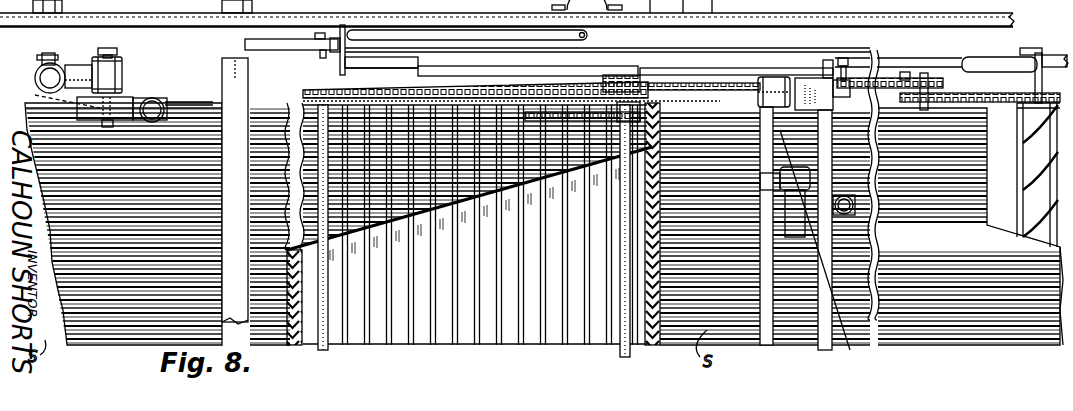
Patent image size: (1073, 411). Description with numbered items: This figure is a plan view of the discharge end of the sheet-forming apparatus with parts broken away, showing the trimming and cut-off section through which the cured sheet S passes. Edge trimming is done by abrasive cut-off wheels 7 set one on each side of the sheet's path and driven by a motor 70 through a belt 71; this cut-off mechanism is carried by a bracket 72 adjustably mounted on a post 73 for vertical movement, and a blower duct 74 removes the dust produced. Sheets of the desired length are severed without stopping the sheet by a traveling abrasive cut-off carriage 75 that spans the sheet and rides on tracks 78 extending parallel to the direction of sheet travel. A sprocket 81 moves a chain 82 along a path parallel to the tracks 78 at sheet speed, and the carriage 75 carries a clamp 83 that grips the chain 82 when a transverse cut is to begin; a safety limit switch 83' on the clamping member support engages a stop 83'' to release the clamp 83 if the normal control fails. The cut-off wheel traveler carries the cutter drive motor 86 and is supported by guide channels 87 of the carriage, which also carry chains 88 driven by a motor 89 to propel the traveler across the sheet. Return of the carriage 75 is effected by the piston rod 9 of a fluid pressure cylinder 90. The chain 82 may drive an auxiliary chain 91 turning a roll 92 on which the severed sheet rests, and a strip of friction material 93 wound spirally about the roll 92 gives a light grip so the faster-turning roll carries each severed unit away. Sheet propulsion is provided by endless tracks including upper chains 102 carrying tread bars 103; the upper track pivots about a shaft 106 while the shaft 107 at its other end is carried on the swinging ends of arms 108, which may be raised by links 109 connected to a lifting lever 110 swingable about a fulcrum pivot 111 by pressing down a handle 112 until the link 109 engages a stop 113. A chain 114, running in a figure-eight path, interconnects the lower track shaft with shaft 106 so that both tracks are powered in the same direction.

The abrasive cut-off wheels 7 is at (58, 95).
The piston rod 9 is at (932, 58).
The motor 70 is at (113, 72).
The belt 71 is at (118, 52).
The bracket 72 is at (80, 73).
The post 73 is at (35, 73).
The blower duct 74 is at (160, 99).
The traveling abrasive cut-off carriage 75 is at (800, 78).
The tracks 78 is at (728, 70).
The sprocket 81 is at (590, 72).
The chain 82 is at (670, 82).
The clamp 83 is at (849, 96).
The safety limit switch 83' is at (853, 56).
The stop 83'' is at (916, 71).
The cutter drive motor 86 is at (821, 252).
The guide channels 87 is at (823, 347).
The chains 88 is at (790, 142).
The motor 89 is at (768, 80).
The fluid pressure cylinder 90 is at (983, 60).
The auxiliary chain 91 is at (958, 92).
The roll 92 is at (1020, 118).
The friction material strip 93 is at (1023, 177).
The upper chains or belts 102 is at (655, 104).
The tread bars 103 is at (490, 337).
The shaft 106 is at (620, 357).
The shaft 107 is at (325, 350).
The arms 108 is at (538, 74).
The links 109 is at (268, 50).
The lifting lever 110 is at (250, 42).
The fulcrum pivot 111 is at (312, 57).
The handle 112 is at (590, 37).
The stop 113 is at (348, 49).
The chain 114 is at (458, 84).